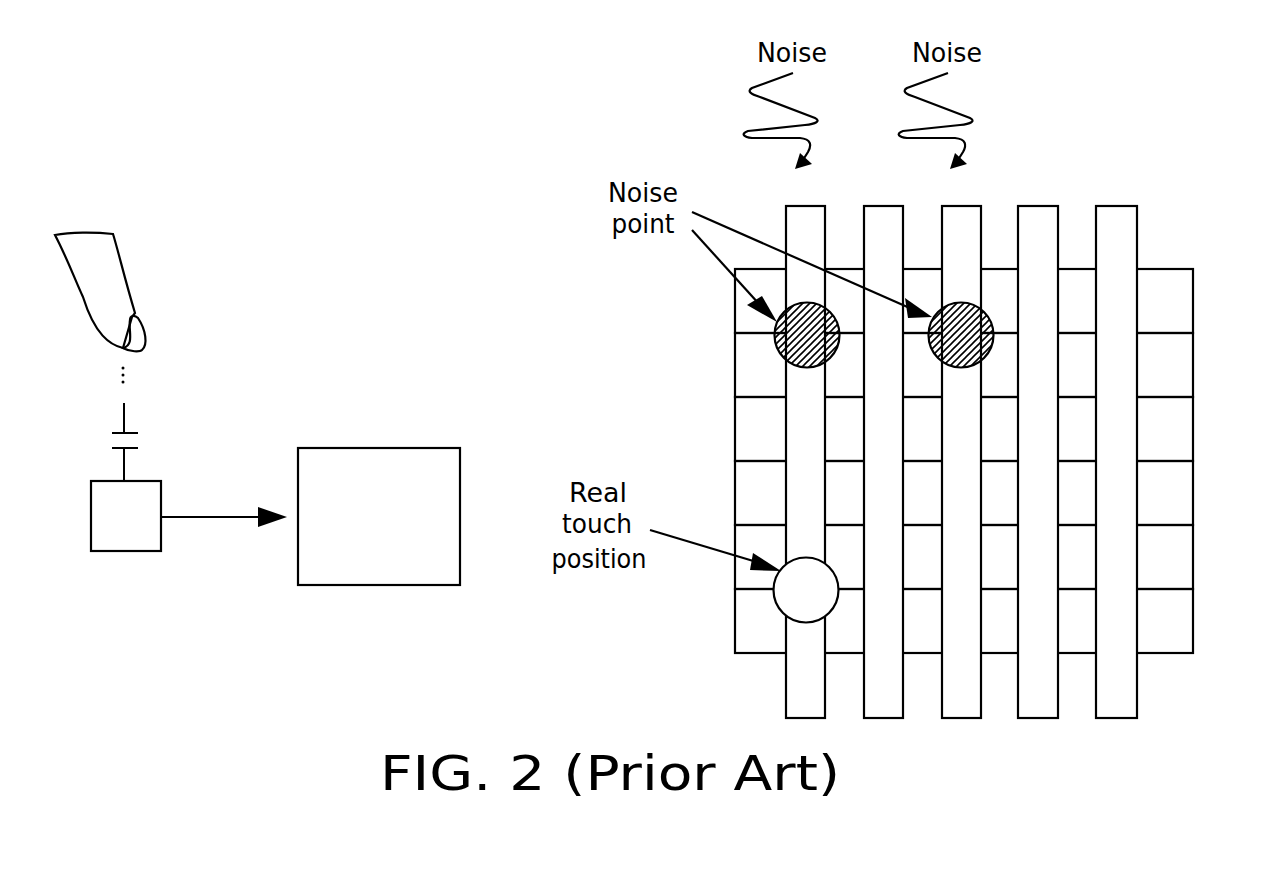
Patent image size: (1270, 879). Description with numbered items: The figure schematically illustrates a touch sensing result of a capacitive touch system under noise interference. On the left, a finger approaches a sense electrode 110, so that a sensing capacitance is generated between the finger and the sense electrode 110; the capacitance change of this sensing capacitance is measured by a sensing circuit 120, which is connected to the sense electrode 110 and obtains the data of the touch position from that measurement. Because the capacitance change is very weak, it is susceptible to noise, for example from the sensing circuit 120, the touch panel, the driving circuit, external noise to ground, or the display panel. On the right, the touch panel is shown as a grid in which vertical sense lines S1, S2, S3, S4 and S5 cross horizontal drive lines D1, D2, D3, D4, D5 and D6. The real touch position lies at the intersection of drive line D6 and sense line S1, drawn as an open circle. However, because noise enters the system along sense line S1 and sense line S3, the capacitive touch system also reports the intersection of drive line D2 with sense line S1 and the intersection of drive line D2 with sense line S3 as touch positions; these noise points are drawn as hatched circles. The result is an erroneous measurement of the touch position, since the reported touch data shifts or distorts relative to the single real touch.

The sense electrode 110 is at (127, 552).
The sensing circuit 120 is at (368, 587).
The sense line S1 is at (805, 445).
The sense line S2 is at (883, 445).
The sense line S3 is at (961, 445).
The sense line S4 is at (1038, 445).
The sense line S5 is at (1116, 445).
The drive line D1 is at (940, 301).
The drive line D2 is at (940, 365).
The drive line D3 is at (940, 429).
The drive line D4 is at (940, 493).
The drive line D5 is at (940, 557).
The drive line D6 is at (940, 621).